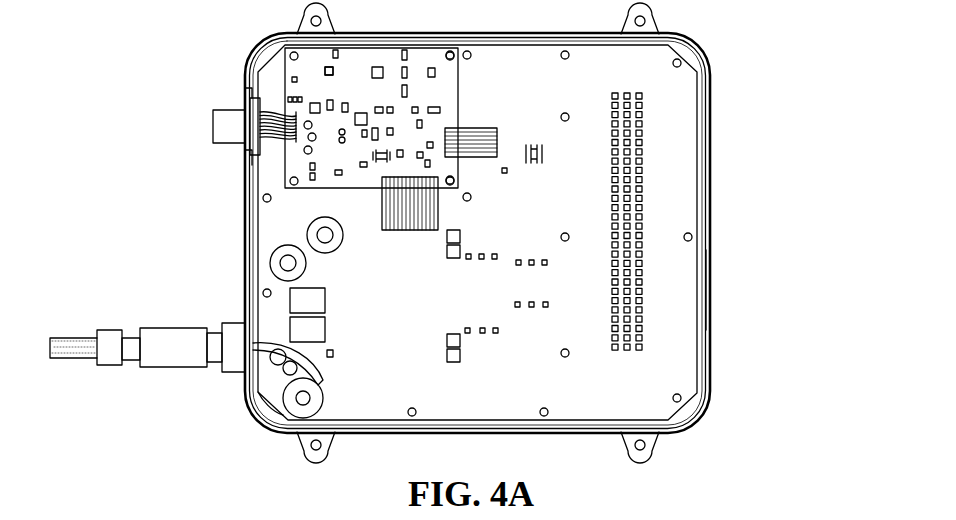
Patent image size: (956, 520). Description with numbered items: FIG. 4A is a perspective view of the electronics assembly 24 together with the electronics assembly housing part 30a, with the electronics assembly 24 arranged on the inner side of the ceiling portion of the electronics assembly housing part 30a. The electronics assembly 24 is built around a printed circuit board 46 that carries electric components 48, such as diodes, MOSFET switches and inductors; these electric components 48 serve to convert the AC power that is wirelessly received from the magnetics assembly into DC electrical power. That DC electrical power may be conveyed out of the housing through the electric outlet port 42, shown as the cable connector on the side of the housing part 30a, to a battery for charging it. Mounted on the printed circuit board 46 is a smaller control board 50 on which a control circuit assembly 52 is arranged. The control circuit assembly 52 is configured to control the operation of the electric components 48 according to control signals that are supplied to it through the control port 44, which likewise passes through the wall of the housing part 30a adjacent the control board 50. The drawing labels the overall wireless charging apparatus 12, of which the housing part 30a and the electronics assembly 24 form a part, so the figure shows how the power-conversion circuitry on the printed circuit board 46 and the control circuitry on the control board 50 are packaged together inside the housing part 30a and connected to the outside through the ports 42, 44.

The enclosure 12 is at (742, 188).
The electronics assembly 24 is at (583, 192).
The electronics assembly housing part 30a is at (712, 290).
The electric outlet port 42 is at (178, 328).
The control port 44 is at (213, 128).
The printed circuit board 46 is at (657, 362).
The electric components 48 is at (545, 310).
The control board 50 is at (302, 165).
The control circuit assembly 52 is at (312, 85).